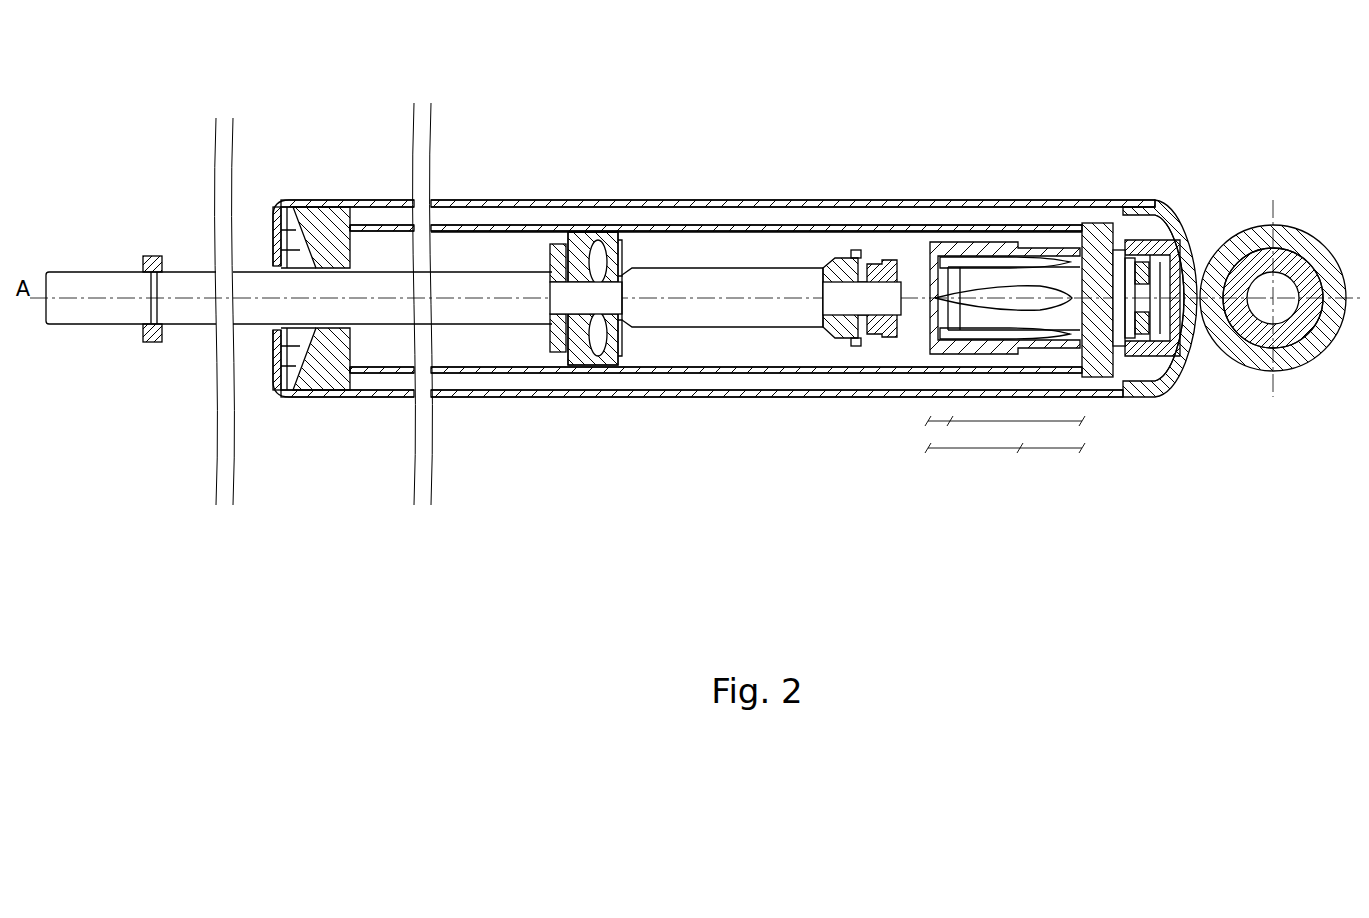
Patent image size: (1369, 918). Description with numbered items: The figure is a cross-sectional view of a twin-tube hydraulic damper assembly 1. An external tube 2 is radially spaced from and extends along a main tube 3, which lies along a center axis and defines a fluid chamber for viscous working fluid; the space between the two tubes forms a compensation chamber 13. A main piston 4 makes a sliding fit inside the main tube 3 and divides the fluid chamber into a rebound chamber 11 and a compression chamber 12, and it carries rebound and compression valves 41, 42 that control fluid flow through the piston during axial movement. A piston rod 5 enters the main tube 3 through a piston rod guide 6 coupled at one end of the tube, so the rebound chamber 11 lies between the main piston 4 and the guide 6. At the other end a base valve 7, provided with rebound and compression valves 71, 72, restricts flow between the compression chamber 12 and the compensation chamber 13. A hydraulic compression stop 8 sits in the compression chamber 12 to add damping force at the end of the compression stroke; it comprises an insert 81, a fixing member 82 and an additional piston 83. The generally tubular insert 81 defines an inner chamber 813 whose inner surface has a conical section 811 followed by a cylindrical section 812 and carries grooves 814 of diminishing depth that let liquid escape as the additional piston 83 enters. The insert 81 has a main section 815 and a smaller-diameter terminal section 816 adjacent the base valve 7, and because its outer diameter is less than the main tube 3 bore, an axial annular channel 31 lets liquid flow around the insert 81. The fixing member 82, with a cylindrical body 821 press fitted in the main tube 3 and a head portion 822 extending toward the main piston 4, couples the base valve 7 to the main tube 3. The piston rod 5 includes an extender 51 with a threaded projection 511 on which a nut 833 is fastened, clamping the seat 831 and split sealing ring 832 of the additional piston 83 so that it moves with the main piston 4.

The hydraulic damper assembly 1 is at (466, 412).
The external tube 2 is at (670, 397).
The main tube 3 is at (626, 368).
The main piston 4 is at (593, 303).
The rebound valve 41 is at (613, 230).
The compression valve 42 is at (565, 362).
The piston rod 5 is at (192, 308).
The extender 51 is at (720, 285).
The threaded projection 511 is at (884, 266).
The piston rod guide 6 is at (318, 375).
The base valve 7 is at (1167, 303).
The rebound valve 71 is at (1133, 243).
The compression valve 72 is at (1170, 392).
The hydraulic compression stop 8 is at (1121, 303).
The insert 81 is at (983, 303).
The conical section 811 is at (950, 423).
The cylindrical section 812 is at (971, 422).
The inner chamber 813 is at (1023, 247).
The grooves 814 is at (968, 255).
The main section 815 is at (994, 450).
The terminal section 816 is at (1048, 450).
The fixing member 82 is at (1123, 303).
The cylindrical body 821 is at (1120, 375).
The head portion 822 is at (1088, 375).
The additional piston 83 is at (825, 303).
The seat 831 is at (830, 327).
The split sealing ring 832 is at (853, 340).
The nut 833 is at (887, 328).
The rebound chamber 11 is at (388, 370).
The compression chamber 12 is at (682, 258).
The compensation chamber 13 is at (786, 224).
The axial annular channel 31 is at (1043, 238).